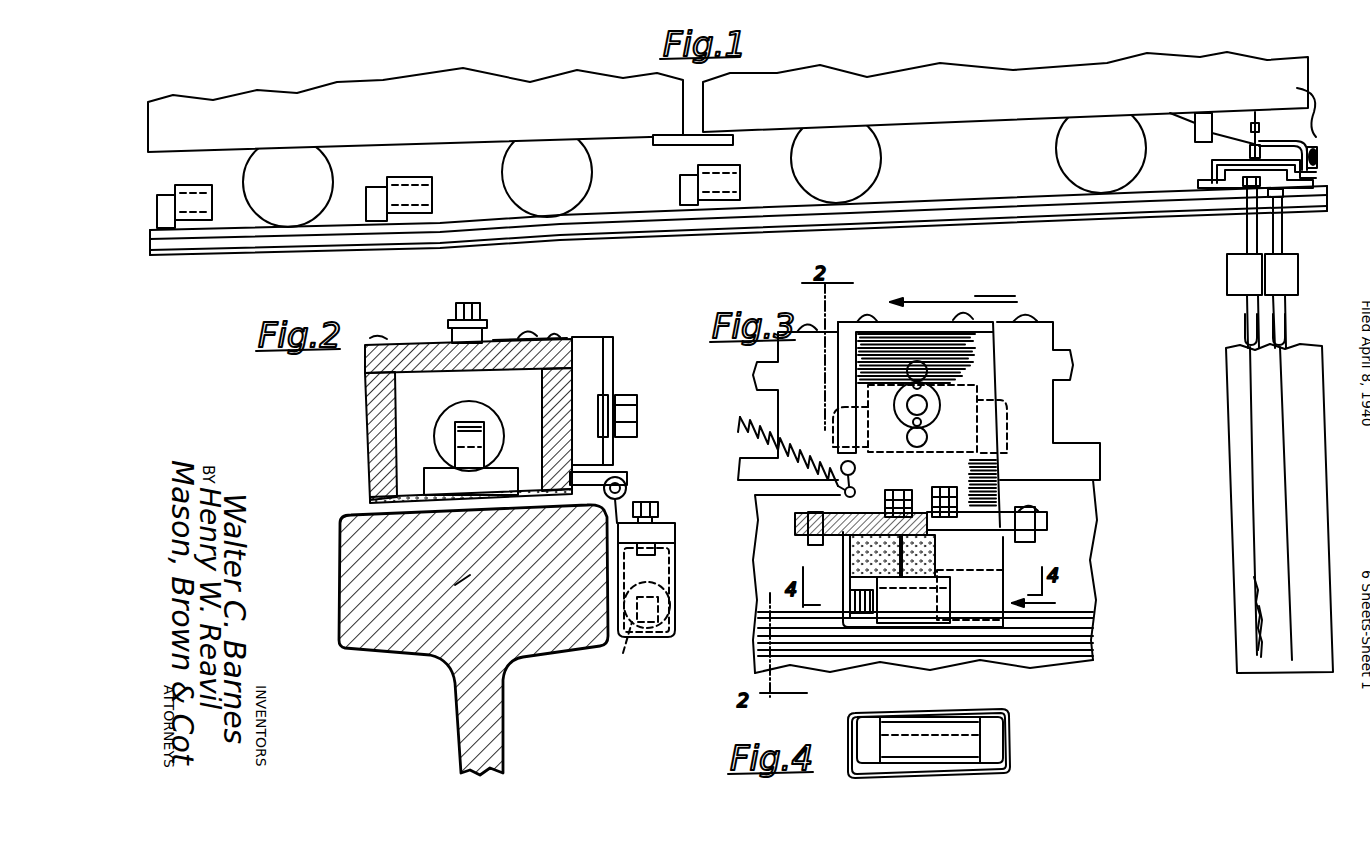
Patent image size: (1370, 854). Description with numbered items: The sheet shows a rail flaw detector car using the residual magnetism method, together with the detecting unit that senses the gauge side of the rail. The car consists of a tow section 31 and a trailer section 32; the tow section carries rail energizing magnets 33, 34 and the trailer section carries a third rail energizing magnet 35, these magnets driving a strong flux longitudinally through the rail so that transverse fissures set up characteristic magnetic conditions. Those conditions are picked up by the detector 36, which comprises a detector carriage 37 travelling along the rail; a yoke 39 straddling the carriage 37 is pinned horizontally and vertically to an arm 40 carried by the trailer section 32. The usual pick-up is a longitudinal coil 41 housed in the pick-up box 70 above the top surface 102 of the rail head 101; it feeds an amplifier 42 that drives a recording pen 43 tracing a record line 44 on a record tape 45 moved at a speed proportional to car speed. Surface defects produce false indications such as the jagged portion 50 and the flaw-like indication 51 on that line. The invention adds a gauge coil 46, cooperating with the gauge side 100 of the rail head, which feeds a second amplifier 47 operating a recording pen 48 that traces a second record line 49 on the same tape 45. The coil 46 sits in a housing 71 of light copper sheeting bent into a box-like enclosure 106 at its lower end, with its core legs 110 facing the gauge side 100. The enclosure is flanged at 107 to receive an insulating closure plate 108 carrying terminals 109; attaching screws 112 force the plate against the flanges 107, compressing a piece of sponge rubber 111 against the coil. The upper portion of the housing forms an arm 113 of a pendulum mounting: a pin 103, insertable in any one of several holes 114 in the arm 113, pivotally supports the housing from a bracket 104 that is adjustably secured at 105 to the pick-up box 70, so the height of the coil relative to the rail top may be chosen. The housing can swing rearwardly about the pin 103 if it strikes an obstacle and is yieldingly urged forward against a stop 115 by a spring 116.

In FIG. 1, the tow section 31 is at (404, 92).
In FIG. 1, the trailer section 32 is at (993, 82).
In FIG. 1, the rail energizing magnet 33 is at (181, 185).
In FIG. 1, the rail energizing magnet 34 is at (416, 169).
In FIG. 1, the third rail energizing magnet 35 is at (723, 165).
In FIG. 1, the detector 36 is at (1290, 109).
In FIG. 1, the detector carriage 37 is at (1203, 190).
In FIG. 1, the yoke 39 is at (1212, 166).
In FIG. 1, the arm 40 is at (1275, 136).
In FIG. 1, the longitudinal coil 41 is at (1245, 187).
In FIG. 2, the longitudinal coil 41 is at (464, 434).
In FIG. 3, the longitudinal coil 41 is at (1007, 408).
In FIG. 1, the amplifier 42 is at (1227, 278).
In FIG. 1, the recording pen 43 is at (1244, 331).
In FIG. 1, the record line 44 is at (1254, 468).
In FIG. 1, the record tape 45 is at (1245, 581).
In FIG. 1, the gauge pick-up coil 46 is at (1280, 198).
In FIG. 2, the gauge pick-up coil 46 is at (668, 608).
In FIG. 3, the gauge pick-up coil 46 is at (913, 603).
In FIG. 4, the gauge pick-up coil 46 is at (912, 725).
In FIG. 1, the amplifier 47 is at (1307, 248).
In FIG. 1, the recording pen 48 is at (1286, 329).
In FIG. 1, the record line 49 is at (1285, 410).
In FIG. 1, the jagged portion 50 is at (1252, 613).
In FIG. 1, the indication 51 is at (1253, 421).
In FIG. 2, the pick-up box 70 is at (423, 343).
In FIG. 3, the pick-up box 70 is at (1043, 368).
In FIG. 2, the housing 71 is at (675, 531).
In FIG. 3, the housing 71 is at (938, 562).
In FIG. 2, the gauge side 100 is at (603, 575).
In FIG. 2, the rail head 101 is at (471, 585).
In FIG. 2, the top surface 102 is at (518, 508).
In FIG. 2, the pin 103 is at (628, 410).
In FIG. 3, the pin 103 is at (926, 392).
In FIG. 2, the bracket 104 is at (588, 337).
In FIG. 3, the bracket 104 is at (852, 388).
In FIG. 2, the adjustable securing point 105 is at (530, 333).
In FIG. 3, the adjustable securing point 105 is at (858, 320).
In FIG. 2, the box-like enclosure 106 is at (675, 569).
In FIG. 3, the box-like enclosure 106 is at (1003, 562).
In FIG. 4, the box-like enclosure 106 is at (955, 713).
In FIG. 3, the flanges 107 is at (1035, 528).
In FIG. 2, the insulating closure plate 108 is at (655, 522).
In FIG. 3, the insulating closure plate 108 is at (870, 512).
In FIG. 2, the terminals 109 is at (658, 505).
In FIG. 3, the terminals 109 is at (935, 495).
In FIG. 2, the core legs 110 is at (628, 650).
In FIG. 4, the core legs 110 is at (860, 727).
In FIG. 3, the sponge rubber 111 is at (848, 560).
In FIG. 3, the attaching screws 112 is at (1030, 507).
In FIG. 2, the arm 113 is at (620, 512).
In FIG. 3, the arm 113 is at (982, 488).
In FIG. 3, the holes 114 is at (927, 369).
In FIG. 2, the stop 115 is at (622, 478).
In FIG. 3, the stop 115 is at (843, 462).
In FIG. 2, the spring 116 is at (626, 490).
In FIG. 3, the spring 116 is at (788, 443).